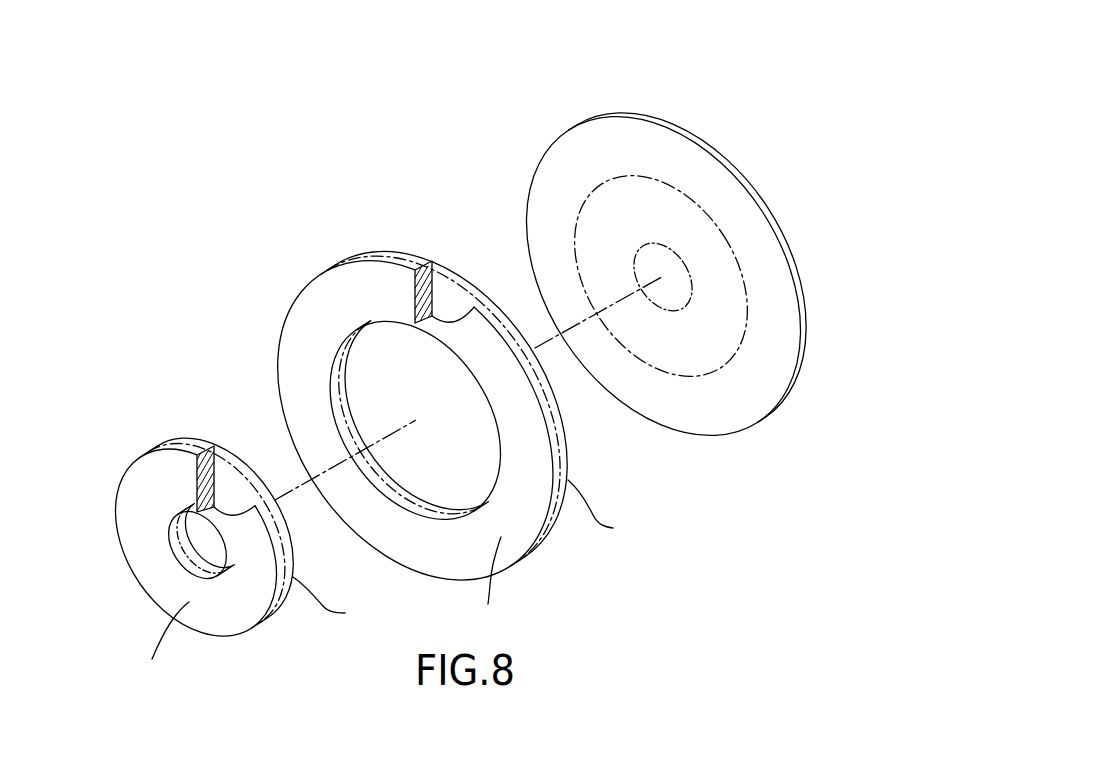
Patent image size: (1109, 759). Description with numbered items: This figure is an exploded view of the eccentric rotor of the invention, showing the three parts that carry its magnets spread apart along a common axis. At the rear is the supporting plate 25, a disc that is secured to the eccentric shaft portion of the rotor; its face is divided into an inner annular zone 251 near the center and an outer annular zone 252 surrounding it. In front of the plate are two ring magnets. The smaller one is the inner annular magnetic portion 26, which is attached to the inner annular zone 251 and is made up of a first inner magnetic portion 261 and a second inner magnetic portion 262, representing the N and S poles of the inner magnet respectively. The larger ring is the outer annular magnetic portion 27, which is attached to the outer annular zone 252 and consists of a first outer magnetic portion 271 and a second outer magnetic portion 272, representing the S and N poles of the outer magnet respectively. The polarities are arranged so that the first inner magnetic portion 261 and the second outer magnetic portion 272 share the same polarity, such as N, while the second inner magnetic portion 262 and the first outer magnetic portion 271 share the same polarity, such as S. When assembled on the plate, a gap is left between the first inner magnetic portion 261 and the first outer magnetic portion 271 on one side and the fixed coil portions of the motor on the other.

The supporting plate 25 is at (665, 266).
The inner annular zone 251 is at (638, 222).
The outer annular zone 252 is at (693, 174).
The inner annular magnetic portion 26 is at (224, 492).
The first inner magnetic portion 261 is at (172, 474).
The second inner magnetic portion 262 is at (197, 437).
The outer annular magnetic portion 27 is at (452, 369).
The first outer magnetic portion 271 is at (386, 284).
The second outer magnetic portion 272 is at (421, 248).